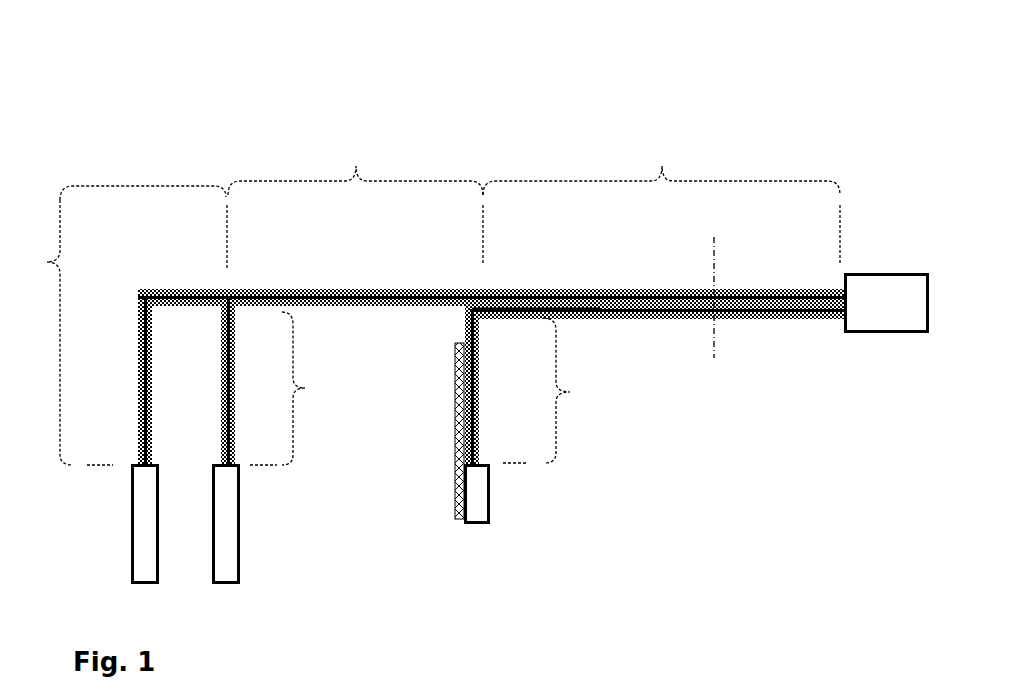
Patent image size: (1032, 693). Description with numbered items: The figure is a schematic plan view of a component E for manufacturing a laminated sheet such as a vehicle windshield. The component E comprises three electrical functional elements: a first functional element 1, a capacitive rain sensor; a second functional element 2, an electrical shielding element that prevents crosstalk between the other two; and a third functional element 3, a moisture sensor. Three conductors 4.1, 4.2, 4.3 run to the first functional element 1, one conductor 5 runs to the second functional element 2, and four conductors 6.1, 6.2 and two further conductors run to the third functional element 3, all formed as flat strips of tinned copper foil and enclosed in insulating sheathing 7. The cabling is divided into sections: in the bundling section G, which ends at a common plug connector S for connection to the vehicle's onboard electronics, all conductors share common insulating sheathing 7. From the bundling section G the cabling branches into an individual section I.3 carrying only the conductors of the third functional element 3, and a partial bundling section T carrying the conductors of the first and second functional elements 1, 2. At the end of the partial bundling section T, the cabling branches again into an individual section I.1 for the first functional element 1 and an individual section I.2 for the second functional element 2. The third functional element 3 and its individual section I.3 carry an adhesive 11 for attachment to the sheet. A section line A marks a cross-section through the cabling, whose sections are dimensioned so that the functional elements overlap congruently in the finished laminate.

The first electrical functional element 1 is at (143, 517).
The second functional element 2 is at (226, 513).
The third functional element 3 is at (476, 494).
The conductor 5 is at (225, 310).
The insulating sheathing 7 is at (411, 290).
The adhesive 11 is at (456, 505).
The conductor 4.1 is at (150, 368).
The conductor 4.2 is at (199, 380).
The conductor 4.3 is at (321, 397).
The conductor 6.1 is at (469, 334).
The conductor 6.2 is at (420, 355).
The plug connector S is at (872, 318).
The component E is at (132, 135).
The partial bundling section T is at (355, 163).
The bundling section G is at (661, 163).
The section line A-A' A is at (713, 304).
The individual section I.1 is at (122, 325).
The individual section I.2 is at (294, 388).
The individual section I.3 is at (558, 390).